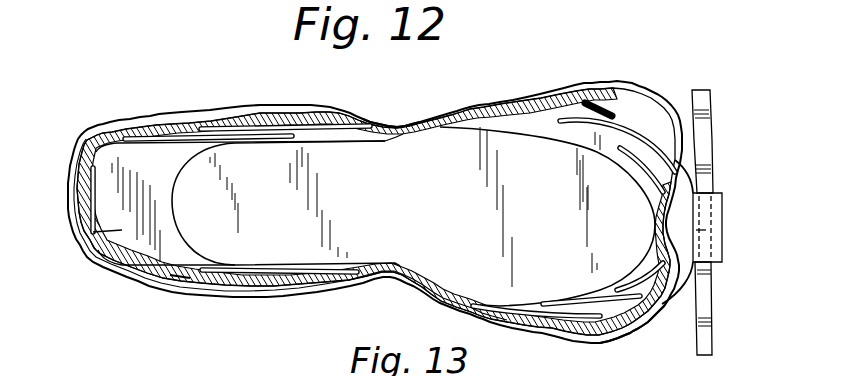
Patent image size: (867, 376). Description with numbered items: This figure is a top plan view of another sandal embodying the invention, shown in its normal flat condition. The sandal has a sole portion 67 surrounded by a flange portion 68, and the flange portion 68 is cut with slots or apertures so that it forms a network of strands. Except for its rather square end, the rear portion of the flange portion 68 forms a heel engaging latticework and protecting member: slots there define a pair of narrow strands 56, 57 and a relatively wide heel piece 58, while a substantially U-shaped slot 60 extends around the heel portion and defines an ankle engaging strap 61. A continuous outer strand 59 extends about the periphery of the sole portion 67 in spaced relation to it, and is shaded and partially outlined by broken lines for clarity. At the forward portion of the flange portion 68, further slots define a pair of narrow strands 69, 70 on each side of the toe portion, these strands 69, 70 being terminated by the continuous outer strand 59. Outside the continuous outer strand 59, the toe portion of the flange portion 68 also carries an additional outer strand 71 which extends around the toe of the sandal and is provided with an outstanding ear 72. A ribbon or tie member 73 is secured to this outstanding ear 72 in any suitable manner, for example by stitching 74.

The narrow strand 56 is at (245, 268).
The narrow strand 57 is at (267, 131).
The heel piece 58 is at (92, 255).
The continuous outer strand 59 is at (638, 142).
The U-shaped slot 60 is at (140, 268).
The ankle engaging strap 61 is at (160, 117).
The sole portion 67 is at (456, 207).
The flange portion 68 is at (391, 114).
The narrow strand 69 is at (621, 147).
The narrow strand 70 is at (607, 319).
The additional outer strand 71 is at (656, 313).
The outstanding ear 72 is at (718, 240).
The ribbon or tie member 73 is at (707, 162).
The stitching 74 is at (705, 222).